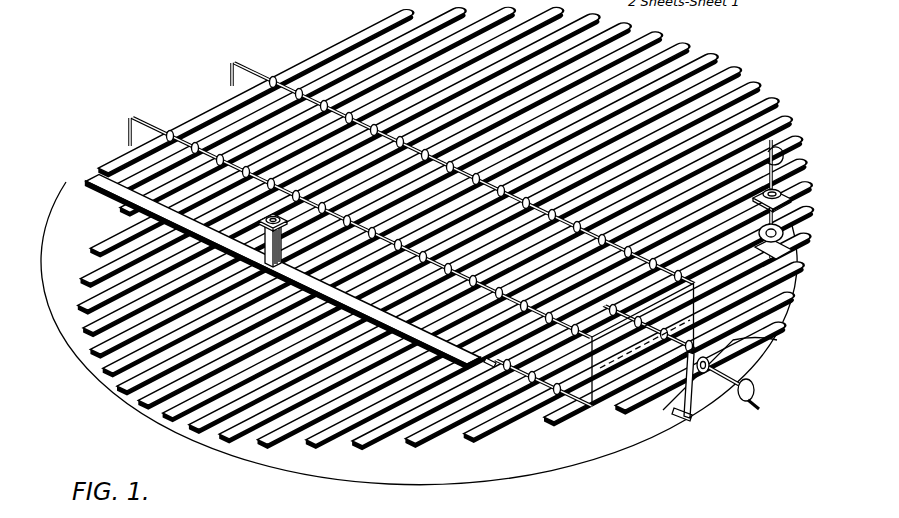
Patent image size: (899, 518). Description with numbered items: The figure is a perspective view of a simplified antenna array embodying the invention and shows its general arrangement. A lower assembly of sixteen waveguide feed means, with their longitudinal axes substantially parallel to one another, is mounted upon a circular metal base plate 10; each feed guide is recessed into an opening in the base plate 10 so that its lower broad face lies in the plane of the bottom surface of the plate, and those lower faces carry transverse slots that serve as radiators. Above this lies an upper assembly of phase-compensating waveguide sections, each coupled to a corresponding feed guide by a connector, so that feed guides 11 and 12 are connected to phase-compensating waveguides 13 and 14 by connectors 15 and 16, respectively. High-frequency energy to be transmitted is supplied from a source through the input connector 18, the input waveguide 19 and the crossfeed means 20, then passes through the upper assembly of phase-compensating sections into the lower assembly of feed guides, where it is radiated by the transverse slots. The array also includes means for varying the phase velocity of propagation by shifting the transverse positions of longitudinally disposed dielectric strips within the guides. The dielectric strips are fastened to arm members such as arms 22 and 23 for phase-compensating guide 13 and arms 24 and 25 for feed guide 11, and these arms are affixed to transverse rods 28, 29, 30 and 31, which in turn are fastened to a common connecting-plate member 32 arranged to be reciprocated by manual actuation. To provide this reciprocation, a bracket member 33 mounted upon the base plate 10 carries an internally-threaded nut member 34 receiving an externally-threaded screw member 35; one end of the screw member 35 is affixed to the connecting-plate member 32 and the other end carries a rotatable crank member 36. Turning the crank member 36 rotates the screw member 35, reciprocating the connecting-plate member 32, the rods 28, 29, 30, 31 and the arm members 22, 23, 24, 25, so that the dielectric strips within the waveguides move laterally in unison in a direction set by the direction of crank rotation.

The circular metal base plate 10 is at (778, 340).
The feed guide 11 is at (464, 440).
The feed guide 12 is at (408, 442).
The phase-compensating waveguide 13 is at (773, 258).
The phase-compensating waveguide 14 is at (790, 160).
The connector 15 is at (786, 236).
The connector 16 is at (786, 200).
The input connector 18 is at (258, 224).
The input waveguide 19 is at (265, 262).
The crossfeed means 20 is at (90, 178).
The arm member 22 is at (650, 268).
The arm member 23 is at (500, 358).
The arm member 24 is at (705, 312).
The arm member 25 is at (549, 421).
The transverse rod 28 is at (236, 62).
The transverse rod 29 is at (152, 127).
The transverse rod 30 is at (612, 312).
The transverse rod 31 is at (528, 372).
The connecting-plate member 32 is at (590, 410).
The bracket member 33 is at (690, 400).
The nut member 34 is at (660, 405).
The screw member 35 is at (716, 373).
The crank member 36 is at (756, 392).